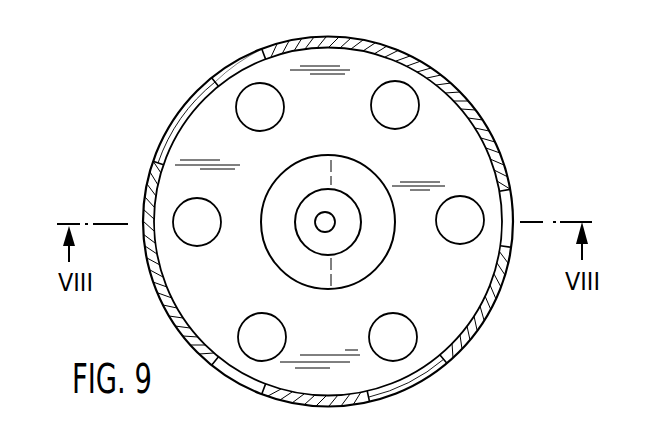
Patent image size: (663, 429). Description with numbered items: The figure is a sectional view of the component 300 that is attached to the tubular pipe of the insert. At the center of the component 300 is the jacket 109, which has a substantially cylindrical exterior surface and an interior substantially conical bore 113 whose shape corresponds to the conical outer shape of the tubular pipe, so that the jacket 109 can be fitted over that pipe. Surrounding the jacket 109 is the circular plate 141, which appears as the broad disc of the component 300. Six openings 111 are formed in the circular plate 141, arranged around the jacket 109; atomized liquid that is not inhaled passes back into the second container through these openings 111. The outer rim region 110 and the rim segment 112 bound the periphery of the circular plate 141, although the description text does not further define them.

The component 300 is at (146, 134).
The peripheral rim ring 110 is at (413, 65).
The rim segment 112 is at (232, 48).
The openings 111 is at (400, 108).
The jacket 109 is at (367, 255).
The circular plate 141 is at (345, 327).
The bore 113 is at (321, 222).